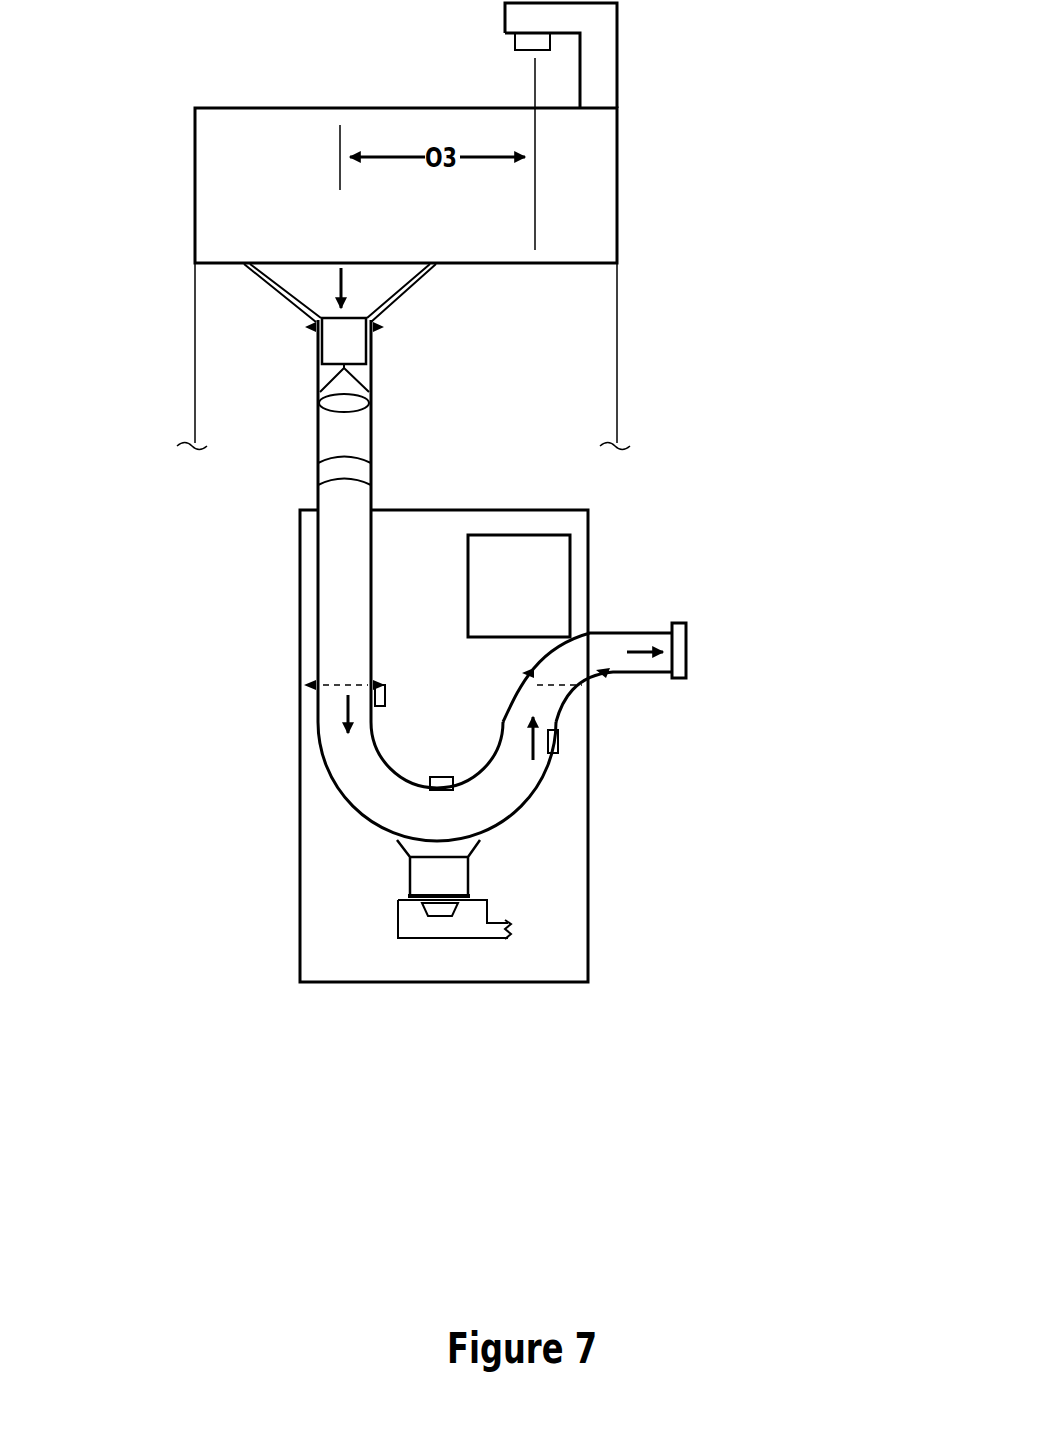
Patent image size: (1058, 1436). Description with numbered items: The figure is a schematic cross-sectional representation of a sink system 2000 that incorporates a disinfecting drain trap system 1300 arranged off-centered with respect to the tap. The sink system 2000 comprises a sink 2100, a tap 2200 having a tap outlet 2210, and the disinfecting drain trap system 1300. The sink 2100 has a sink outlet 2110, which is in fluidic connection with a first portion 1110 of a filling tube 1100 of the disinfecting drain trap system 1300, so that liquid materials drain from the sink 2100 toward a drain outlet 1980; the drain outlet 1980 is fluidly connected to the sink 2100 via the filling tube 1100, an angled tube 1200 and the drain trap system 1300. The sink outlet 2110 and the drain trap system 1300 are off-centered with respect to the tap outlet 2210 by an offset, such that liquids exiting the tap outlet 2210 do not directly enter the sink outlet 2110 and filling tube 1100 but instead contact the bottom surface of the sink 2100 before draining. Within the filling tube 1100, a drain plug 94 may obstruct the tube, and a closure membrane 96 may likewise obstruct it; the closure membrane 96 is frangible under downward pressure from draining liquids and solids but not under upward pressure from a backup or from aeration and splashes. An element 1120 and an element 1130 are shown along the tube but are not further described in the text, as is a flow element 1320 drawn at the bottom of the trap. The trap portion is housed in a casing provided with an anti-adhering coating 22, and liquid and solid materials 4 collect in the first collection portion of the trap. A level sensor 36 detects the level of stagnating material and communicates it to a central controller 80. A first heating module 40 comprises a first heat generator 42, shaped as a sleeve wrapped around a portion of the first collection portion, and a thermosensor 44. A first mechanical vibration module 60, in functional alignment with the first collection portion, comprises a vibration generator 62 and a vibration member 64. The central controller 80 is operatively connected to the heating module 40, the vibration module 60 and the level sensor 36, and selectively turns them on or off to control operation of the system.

The sink system 2000 is at (848, 107).
The sink 2100 is at (178, 221).
The tap 2200 is at (624, 50).
The tap outlet 2210 is at (503, 51).
The sink outlet 2110 is at (341, 244).
The first portion of filling tube 1110 is at (276, 297).
The drain plug 94 is at (378, 287).
The filling tube 1100 is at (278, 352).
The closure membrane 96 is at (370, 370).
The deflector cone 1120 is at (378, 383).
The angled tube 1200 is at (377, 470).
The coupling ring 1130 is at (311, 457).
The disinfecting drain trap system 1300 is at (720, 396).
The anti-adhering coating 22 is at (592, 585).
The central controller 80 is at (548, 604).
The thermosensor 44 is at (388, 711).
The first heating module 40 is at (464, 777).
The liquid and solid materials 4 is at (522, 709).
The level sensor 36 is at (558, 738).
The drain outlet 1980 is at (695, 671).
The first heat generator 42 is at (347, 818).
The flow path 1320 is at (482, 814).
The first mechanical vibration module 60 is at (386, 890).
The vibration member 64 is at (417, 875).
The vibration generator 62 is at (433, 917).